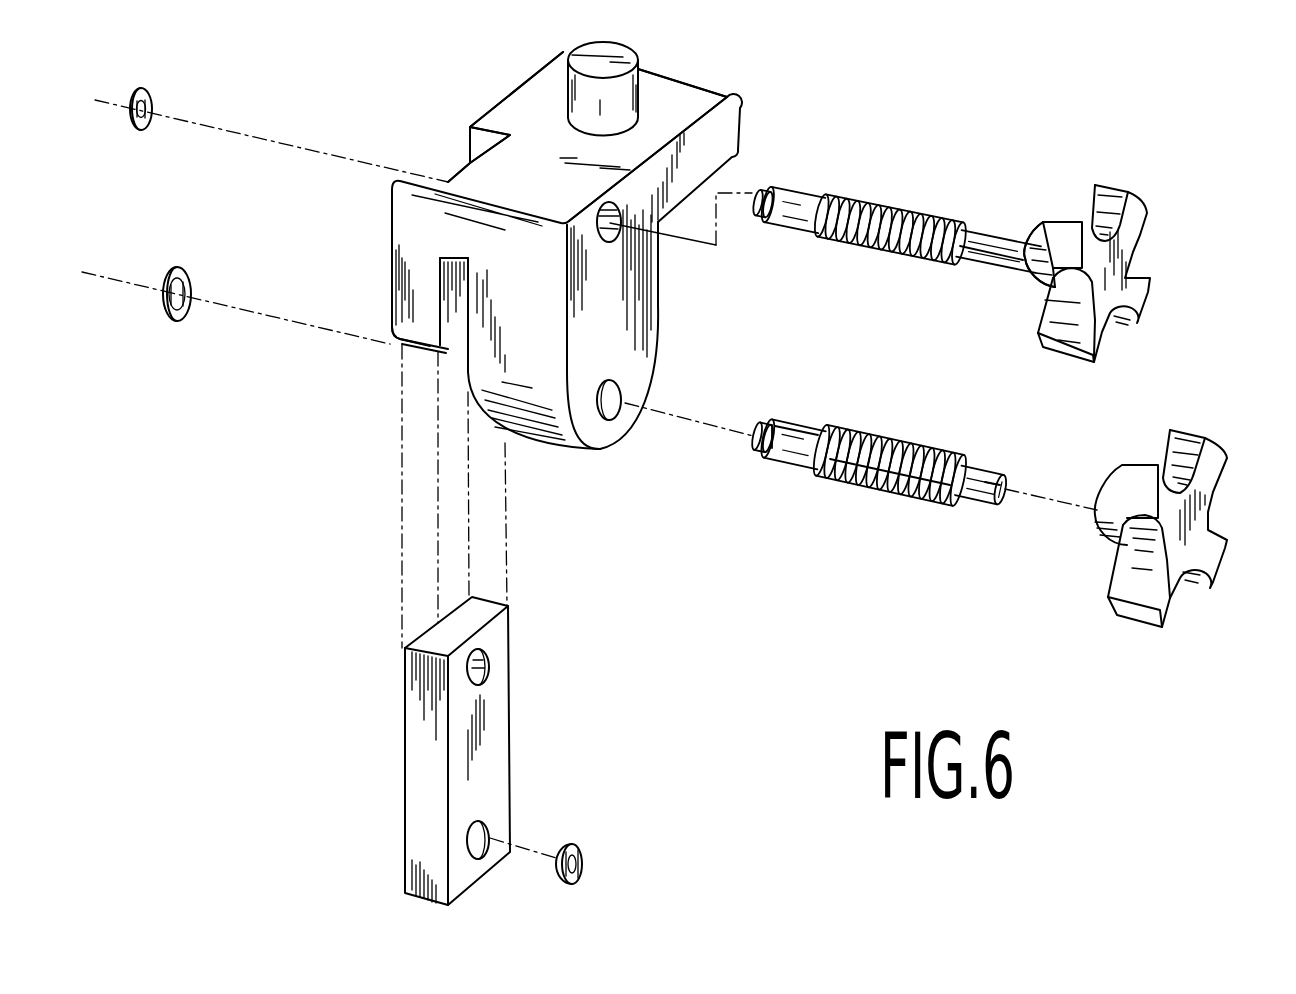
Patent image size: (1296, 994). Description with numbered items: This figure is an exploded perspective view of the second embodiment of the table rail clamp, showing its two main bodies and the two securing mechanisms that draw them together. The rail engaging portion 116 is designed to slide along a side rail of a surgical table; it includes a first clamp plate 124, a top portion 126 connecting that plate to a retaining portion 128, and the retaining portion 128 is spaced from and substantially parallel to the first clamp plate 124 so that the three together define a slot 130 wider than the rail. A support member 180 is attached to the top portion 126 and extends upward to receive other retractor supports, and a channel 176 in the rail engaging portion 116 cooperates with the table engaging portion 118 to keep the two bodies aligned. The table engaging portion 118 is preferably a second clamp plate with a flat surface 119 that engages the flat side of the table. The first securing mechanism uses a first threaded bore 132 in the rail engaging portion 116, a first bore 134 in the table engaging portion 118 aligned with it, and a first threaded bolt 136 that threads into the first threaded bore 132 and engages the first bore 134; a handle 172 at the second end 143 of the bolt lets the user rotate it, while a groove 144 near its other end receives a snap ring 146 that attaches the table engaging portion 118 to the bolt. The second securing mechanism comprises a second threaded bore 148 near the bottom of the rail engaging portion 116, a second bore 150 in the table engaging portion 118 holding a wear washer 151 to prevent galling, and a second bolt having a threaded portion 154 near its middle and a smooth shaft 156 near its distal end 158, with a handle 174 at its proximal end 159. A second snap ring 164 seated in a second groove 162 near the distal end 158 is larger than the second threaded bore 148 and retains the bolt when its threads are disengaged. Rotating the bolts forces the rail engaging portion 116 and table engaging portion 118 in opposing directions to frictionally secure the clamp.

The rail engaging portion 116 is at (392, 339).
The table engaging portion 118 is at (446, 755).
The flat surface 119 is at (406, 709).
The first clamp plate 124 is at (526, 250).
The top portion 126 is at (553, 88).
The retaining portion 128 is at (612, 312).
The slot 130 is at (462, 350).
The first threaded bore 132 is at (614, 228).
The first bore 134 is at (482, 669).
The first threaded bolt 136 is at (986, 232).
The second end 143 is at (1032, 290).
The groove 144 is at (896, 214).
The snap ring 146 is at (140, 101).
The second threaded bore 148 is at (617, 390).
The second bore 150 is at (486, 850).
The wear washer 151 is at (582, 867).
The threaded portion 154 is at (882, 482).
The smooth shaft 156 is at (793, 450).
The distal end 158 is at (874, 476).
The proximal end 159 is at (997, 490).
The second groove 162 is at (768, 457).
The second snap ring 164 is at (178, 281).
The handle 172 is at (1107, 255).
The handle 174 is at (1193, 547).
The channel 176 is at (467, 164).
The support member 180 is at (635, 53).